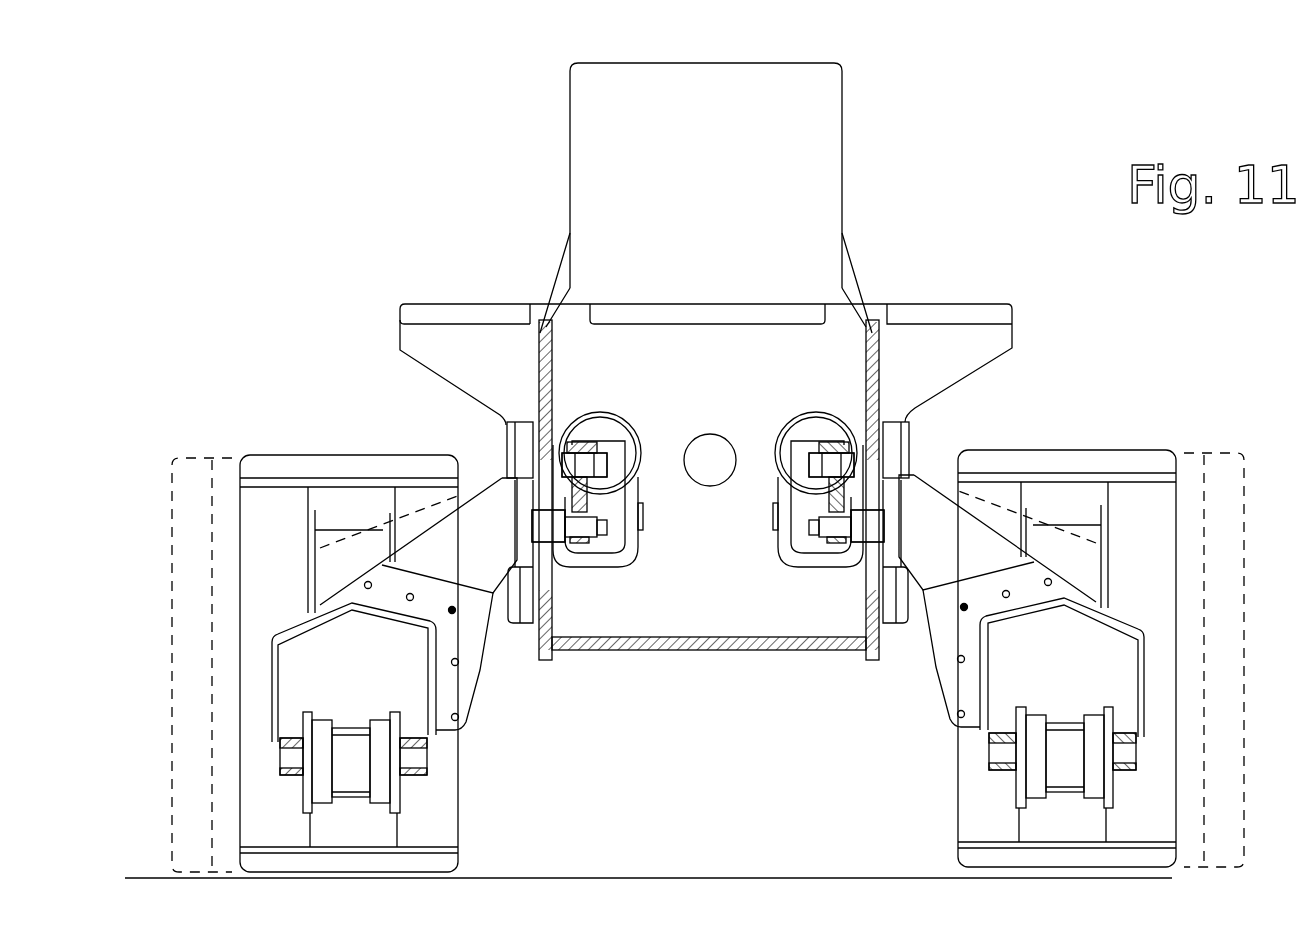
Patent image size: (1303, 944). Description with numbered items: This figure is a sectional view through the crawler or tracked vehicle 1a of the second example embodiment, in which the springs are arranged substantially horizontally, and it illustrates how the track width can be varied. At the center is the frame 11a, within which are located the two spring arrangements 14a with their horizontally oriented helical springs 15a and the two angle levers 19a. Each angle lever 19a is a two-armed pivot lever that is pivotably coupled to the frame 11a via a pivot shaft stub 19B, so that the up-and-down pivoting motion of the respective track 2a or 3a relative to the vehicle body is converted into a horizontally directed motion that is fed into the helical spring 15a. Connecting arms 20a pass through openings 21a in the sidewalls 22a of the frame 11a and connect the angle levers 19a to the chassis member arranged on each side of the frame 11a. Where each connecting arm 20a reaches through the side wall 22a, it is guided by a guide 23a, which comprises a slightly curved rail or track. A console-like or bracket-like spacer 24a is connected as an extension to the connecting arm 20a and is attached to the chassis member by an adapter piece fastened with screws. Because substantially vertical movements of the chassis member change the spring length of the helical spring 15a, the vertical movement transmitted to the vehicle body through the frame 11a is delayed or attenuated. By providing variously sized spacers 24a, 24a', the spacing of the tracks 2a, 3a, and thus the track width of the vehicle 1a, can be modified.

The crawler or tracked vehicle 1a is at (400, 262).
The track 2a is at (1107, 458).
The track 3a is at (280, 468).
The frame 11a is at (887, 348).
The spring arrangement 14a is at (797, 422).
The helical spring 15a is at (604, 413).
The angle lever 19a is at (776, 501).
The pivot shaft stub 19B is at (798, 432).
The connecting arm 20a is at (553, 527).
The opening 21a is at (543, 590).
The sidewall 22a is at (540, 363).
The guide 23a is at (523, 437).
The spacer 24a is at (418, 559).
The spacer 24a' is at (708, 458).